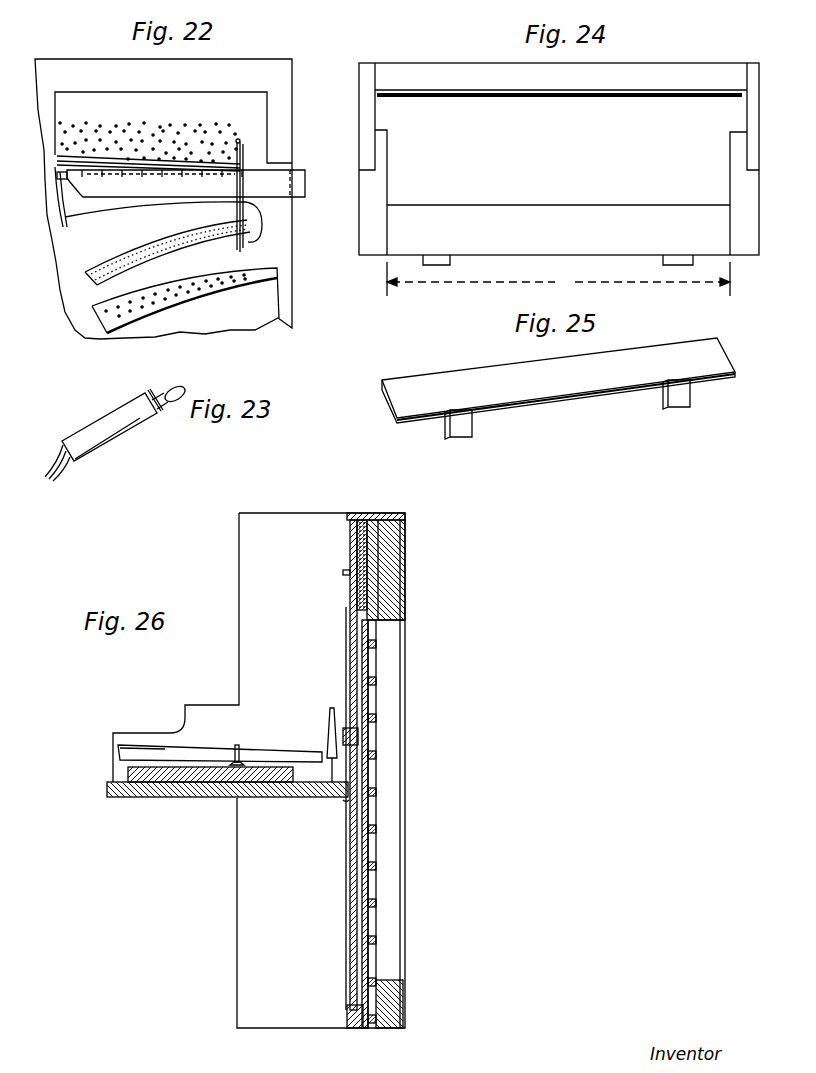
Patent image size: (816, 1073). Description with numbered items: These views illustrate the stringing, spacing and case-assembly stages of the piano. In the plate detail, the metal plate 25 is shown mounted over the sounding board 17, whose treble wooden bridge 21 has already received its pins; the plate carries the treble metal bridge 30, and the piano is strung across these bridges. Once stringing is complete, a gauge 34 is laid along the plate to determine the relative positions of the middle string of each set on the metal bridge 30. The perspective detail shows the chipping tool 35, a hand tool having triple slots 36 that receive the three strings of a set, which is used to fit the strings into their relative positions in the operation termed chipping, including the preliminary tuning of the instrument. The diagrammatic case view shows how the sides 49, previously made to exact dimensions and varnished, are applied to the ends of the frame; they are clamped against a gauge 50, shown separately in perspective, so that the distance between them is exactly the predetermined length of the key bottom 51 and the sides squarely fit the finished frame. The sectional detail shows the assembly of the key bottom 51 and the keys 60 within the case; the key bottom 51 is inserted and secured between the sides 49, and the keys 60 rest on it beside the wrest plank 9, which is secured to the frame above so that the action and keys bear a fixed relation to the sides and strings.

In FIG. 26, the wrest plank 9 is at (350, 578).
In FIG. 26, the sounding board 17 is at (370, 684).
In FIG. 22, the treble wooden bridge 21 is at (143, 246).
In FIG. 22, the metal plate 25 is at (277, 248).
In FIG. 26, the metal plate 25 is at (350, 543).
In FIG. 22, the treble metal bridge 30 is at (72, 207).
In FIG. 22, the gauge 34 is at (297, 174).
In FIG. 23, the chipping tool 35 is at (127, 417).
In FIG. 23, the triple slots 36 is at (55, 474).
In FIG. 24, the sides 49 is at (382, 167).
In FIG. 26, the sides 49 is at (257, 885).
In FIG. 24, the gauge 50 is at (525, 220).
In FIG. 25, the gauge 50 is at (560, 384).
In FIG. 26, the key bottom 51 is at (200, 793).
In FIG. 26, the keys 60 is at (267, 757).